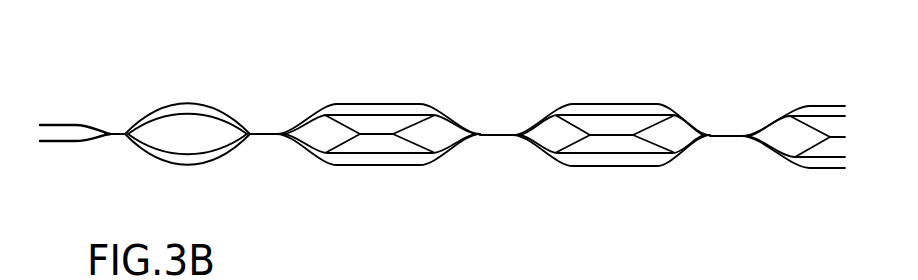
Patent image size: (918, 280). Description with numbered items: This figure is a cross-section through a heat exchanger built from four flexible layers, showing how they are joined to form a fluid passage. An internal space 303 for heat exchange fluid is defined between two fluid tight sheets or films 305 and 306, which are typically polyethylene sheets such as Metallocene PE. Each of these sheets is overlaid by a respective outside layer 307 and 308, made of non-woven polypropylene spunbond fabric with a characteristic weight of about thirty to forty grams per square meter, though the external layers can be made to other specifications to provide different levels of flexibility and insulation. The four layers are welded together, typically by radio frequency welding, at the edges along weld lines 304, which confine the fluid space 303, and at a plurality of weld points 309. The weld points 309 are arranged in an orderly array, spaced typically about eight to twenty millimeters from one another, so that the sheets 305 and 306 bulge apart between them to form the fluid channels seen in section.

The internal space 303 is at (501, 115).
The weld lines 304 is at (115, 132).
The fluid tight sheet 305 is at (450, 158).
The fluid tight sheet 306 is at (457, 115).
The outside layer 307 is at (624, 170).
The outside layer 308 is at (690, 115).
The weld points 309 is at (270, 133).